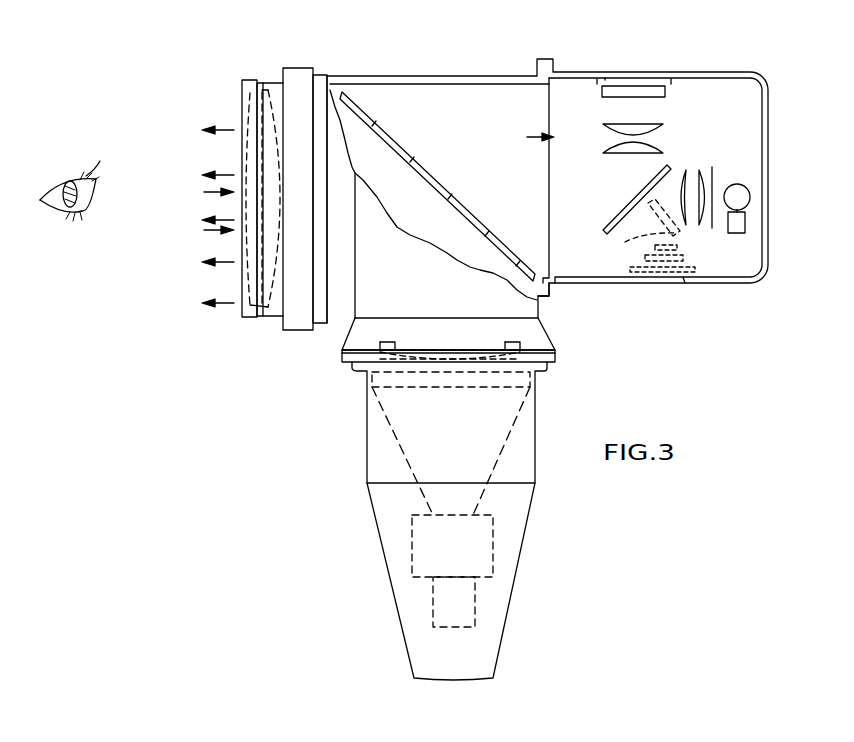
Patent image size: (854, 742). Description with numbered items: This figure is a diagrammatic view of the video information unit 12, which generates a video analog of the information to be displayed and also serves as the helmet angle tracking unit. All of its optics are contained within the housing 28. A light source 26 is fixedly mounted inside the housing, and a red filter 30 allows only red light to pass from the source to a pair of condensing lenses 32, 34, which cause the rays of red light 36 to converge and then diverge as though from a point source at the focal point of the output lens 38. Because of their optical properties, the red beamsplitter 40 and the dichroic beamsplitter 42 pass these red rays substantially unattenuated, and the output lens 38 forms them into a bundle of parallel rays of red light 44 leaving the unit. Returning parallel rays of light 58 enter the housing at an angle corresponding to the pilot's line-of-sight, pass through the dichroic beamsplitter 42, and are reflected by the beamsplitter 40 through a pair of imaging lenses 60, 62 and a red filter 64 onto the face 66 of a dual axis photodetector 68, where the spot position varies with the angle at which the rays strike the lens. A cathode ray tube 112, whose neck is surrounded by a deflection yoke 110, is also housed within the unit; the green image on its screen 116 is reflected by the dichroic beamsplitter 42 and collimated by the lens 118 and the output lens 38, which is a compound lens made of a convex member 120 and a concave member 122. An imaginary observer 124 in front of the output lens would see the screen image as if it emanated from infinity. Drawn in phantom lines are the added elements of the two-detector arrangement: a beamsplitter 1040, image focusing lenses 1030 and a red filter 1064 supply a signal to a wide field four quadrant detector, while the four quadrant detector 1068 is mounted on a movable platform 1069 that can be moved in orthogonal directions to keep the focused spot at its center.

The video information unit 12 is at (556, 300).
The light source 26 is at (745, 195).
The housing 28 is at (757, 284).
The red filter 30 is at (714, 170).
The condensing lens 32 is at (699, 226).
The condensing lens 34 is at (688, 171).
The rays of red light 36 is at (547, 140).
The output lens 38 is at (236, 90).
The red beamsplitter 40 is at (603, 231).
The dichroic beamsplitter 42 is at (432, 183).
The parallel rays of red light 44 is at (226, 131).
The rays of light 58 is at (206, 190).
The imaging lens 60 is at (622, 152).
The imaging lens 62 is at (638, 134).
The red filter 64 is at (658, 124).
The face of photodetector 66 is at (605, 100).
The dual axis photodetector 68 is at (645, 88).
The deflection yoke 110 is at (493, 543).
The cathode ray tube 112 is at (400, 445).
The screen 116 is at (367, 380).
The lens 118 is at (428, 352).
The convex member 120 is at (280, 77).
The concave member 122 is at (298, 74).
The imaginary observer 124 is at (88, 162).
The image focusing lenses 1030 is at (625, 242).
The beamsplitter 1040 is at (650, 201).
The red filter 1064 is at (645, 258).
The four quadrant detector 1068 is at (683, 276).
The movable platform 1069 is at (612, 74).